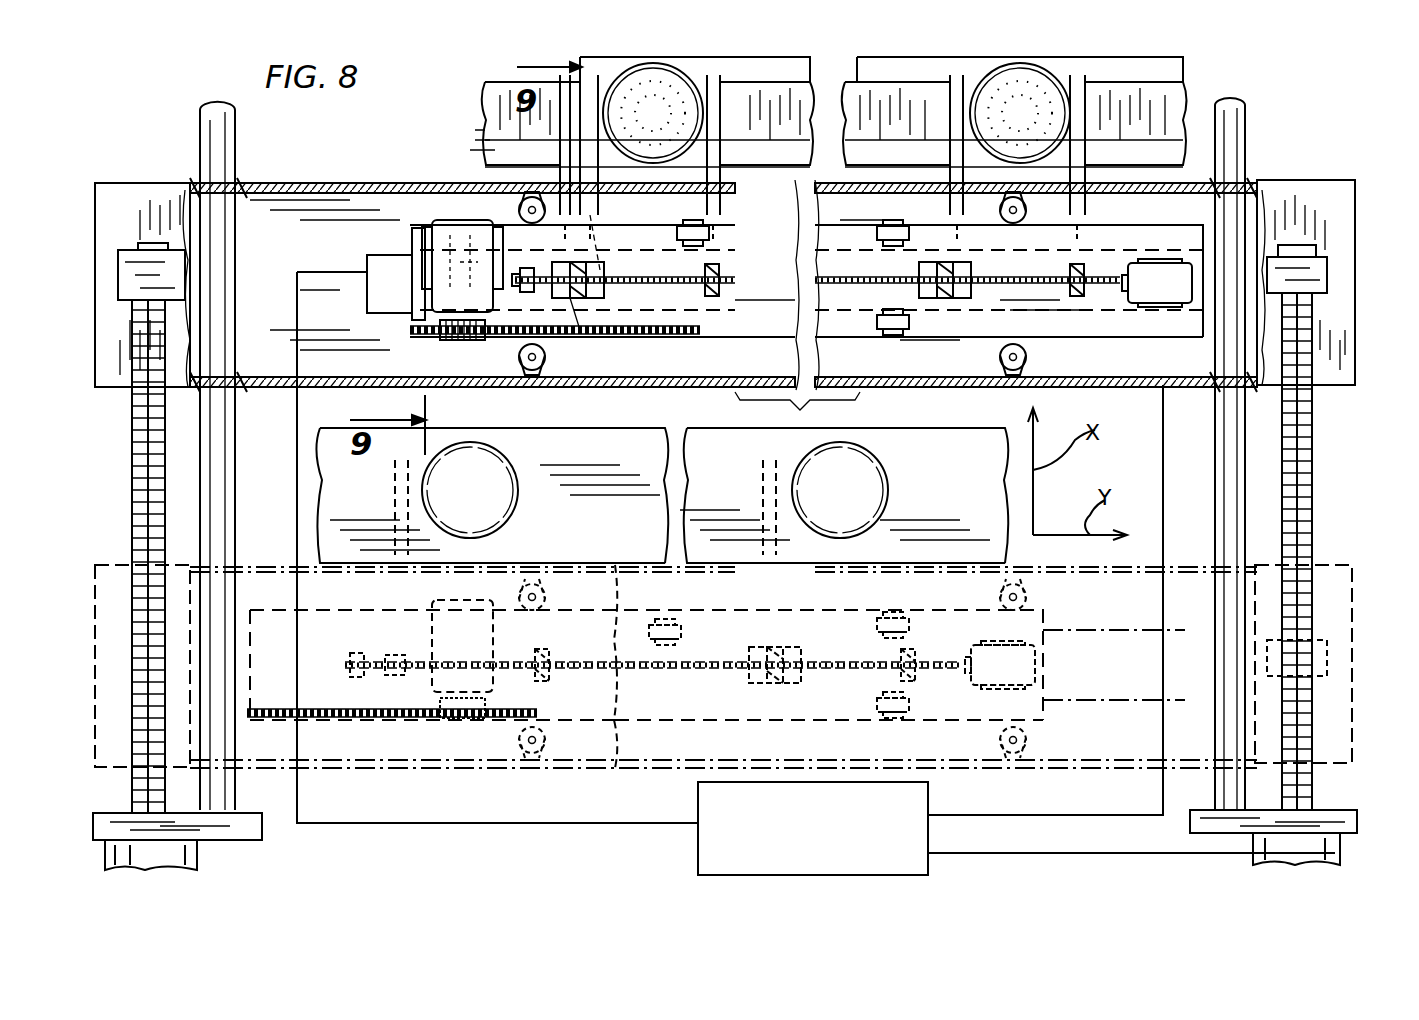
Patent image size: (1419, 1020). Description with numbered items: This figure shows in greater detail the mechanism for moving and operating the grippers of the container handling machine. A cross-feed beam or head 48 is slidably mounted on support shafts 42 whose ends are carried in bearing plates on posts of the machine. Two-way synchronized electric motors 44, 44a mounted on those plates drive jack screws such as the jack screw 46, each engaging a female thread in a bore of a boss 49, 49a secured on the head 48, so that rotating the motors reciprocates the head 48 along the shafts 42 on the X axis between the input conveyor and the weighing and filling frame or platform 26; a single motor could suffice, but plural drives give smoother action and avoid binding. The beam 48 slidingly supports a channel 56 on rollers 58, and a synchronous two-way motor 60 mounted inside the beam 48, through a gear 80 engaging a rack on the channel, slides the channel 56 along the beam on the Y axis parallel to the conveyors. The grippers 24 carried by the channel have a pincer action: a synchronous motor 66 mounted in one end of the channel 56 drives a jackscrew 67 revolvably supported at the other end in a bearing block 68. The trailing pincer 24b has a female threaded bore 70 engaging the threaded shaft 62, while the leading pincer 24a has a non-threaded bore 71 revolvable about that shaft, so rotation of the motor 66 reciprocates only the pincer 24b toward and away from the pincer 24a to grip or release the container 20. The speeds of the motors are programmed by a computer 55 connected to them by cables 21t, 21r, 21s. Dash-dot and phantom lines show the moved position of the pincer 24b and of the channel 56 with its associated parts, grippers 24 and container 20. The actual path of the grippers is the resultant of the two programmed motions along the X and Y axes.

The container 20 is at (700, 100).
The cable 21t is at (565, 823).
The cable 21r is at (1005, 815).
The cable 21s is at (1035, 853).
The grippers 24 is at (748, 196).
The leading pincer 24a is at (1128, 118).
The trailing pincer 24b is at (520, 170).
The frame or platform 26 is at (790, 150).
The support shafts 42 is at (210, 466).
The two-way synchronized electric motor 44 is at (200, 858).
The two-way synchronized electric motor 44a is at (1318, 840).
The jack screw 46 is at (1312, 470).
The cross-feed beam or head 48 is at (1312, 190).
The boss 49 is at (1335, 235).
The boss 49a is at (1312, 690).
The computer 55 is at (700, 855).
The channel 56 is at (680, 312).
The rollers 58 is at (515, 205).
The synchronous two-way motor 60 is at (410, 245).
The threaded shaft 62 is at (1065, 282).
The synchronous motor 66 is at (1170, 263).
The jackscrew 67 is at (790, 285).
The bearing block 68 is at (562, 268).
The female threaded bore 70 is at (620, 300).
The non-threaded bore 71 is at (790, 290).
The pinion 80 is at (610, 300).